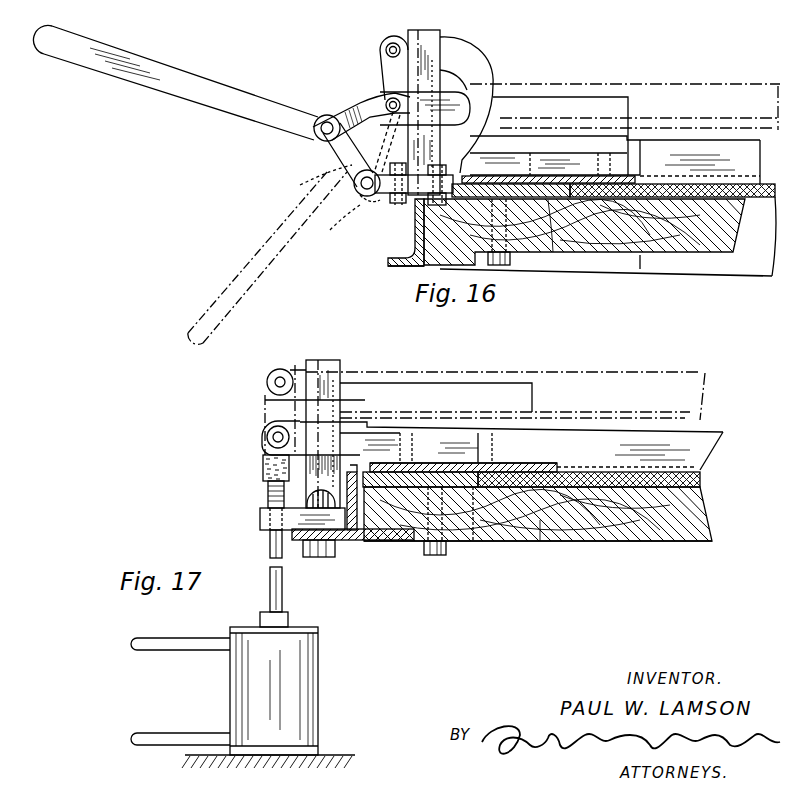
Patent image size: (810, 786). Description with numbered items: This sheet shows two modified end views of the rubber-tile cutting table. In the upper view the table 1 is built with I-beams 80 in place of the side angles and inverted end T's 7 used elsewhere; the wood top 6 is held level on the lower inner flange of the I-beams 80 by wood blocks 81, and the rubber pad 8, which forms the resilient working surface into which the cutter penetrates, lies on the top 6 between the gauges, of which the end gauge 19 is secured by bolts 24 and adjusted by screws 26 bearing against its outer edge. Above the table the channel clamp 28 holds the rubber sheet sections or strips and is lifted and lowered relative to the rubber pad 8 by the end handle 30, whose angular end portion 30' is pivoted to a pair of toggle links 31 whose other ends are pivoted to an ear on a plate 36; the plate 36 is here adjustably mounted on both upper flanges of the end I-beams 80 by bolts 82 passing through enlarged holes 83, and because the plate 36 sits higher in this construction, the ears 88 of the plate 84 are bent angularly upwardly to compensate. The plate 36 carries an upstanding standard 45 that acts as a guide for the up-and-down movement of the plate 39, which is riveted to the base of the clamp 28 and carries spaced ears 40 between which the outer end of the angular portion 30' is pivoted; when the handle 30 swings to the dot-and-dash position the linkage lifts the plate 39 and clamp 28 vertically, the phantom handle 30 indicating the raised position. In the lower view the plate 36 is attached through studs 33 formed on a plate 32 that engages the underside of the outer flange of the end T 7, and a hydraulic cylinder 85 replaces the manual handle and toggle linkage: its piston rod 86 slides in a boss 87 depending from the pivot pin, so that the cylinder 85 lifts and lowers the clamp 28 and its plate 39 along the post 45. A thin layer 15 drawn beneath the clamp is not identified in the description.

In FIG. 16, the table 1 is at (716, 254).
In FIG. 17, the table 1 is at (660, 542).
In FIG. 16, the wood top 6 is at (641, 255).
In FIG. 17, the wood top 6 is at (540, 542).
In FIG. 17, the inverted end T's 7 is at (392, 541).
In FIG. 16, the rubber pad 8 is at (757, 202).
In FIG. 17, the rubber pad 8 is at (702, 490).
In FIG. 16, the plate 15 is at (775, 190).
In FIG. 17, the plate 15 is at (702, 480).
In FIG. 16, the end gauge 19 is at (553, 252).
In FIG. 17, the end gauge 19 is at (474, 542).
In FIG. 16, the bolts 24 is at (500, 266).
In FIG. 17, the bolts 24 is at (443, 556).
In FIG. 16, the screws 26 is at (438, 175).
In FIG. 16, the channel clamp 28 is at (705, 140).
In FIG. 17, the channel clamp 28 is at (690, 450).
In FIG. 16, the end handles 30 is at (190, 184).
In FIG. 16, the angular end portions 30' is at (361, 108).
In FIG. 16, the toggle links 31 is at (330, 176).
In FIG. 17, the plate 32 is at (336, 556).
In FIG. 17, the studs 33 is at (305, 490).
In FIG. 16, the plate 36 is at (378, 200).
In FIG. 17, the plate 39 is at (458, 425).
In FIG. 17, the spaced ears 40 is at (297, 369).
In FIG. 16, the upstanding standard 45 is at (418, 30).
In FIG. 17, the upstanding standard 45 is at (322, 360).
In FIG. 16, the I-beams 80 is at (414, 240).
In FIG. 16, the wood blocks 81 is at (410, 267).
In FIG. 16, the bolts 82 is at (345, 150).
In FIG. 16, the enlarged holes 83 is at (355, 222).
In FIG. 16, the plate 84 is at (620, 156).
In FIG. 17, the hydraulic cylinder 85 is at (318, 658).
In FIG. 17, the cylinder piston rod 86 is at (285, 583).
In FIG. 17, the boss 87 is at (260, 516).
In FIG. 16, the ears 88 is at (482, 100).